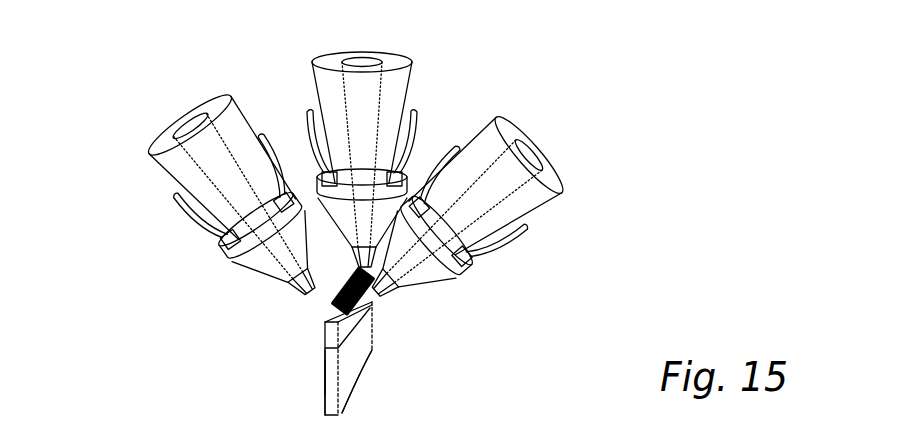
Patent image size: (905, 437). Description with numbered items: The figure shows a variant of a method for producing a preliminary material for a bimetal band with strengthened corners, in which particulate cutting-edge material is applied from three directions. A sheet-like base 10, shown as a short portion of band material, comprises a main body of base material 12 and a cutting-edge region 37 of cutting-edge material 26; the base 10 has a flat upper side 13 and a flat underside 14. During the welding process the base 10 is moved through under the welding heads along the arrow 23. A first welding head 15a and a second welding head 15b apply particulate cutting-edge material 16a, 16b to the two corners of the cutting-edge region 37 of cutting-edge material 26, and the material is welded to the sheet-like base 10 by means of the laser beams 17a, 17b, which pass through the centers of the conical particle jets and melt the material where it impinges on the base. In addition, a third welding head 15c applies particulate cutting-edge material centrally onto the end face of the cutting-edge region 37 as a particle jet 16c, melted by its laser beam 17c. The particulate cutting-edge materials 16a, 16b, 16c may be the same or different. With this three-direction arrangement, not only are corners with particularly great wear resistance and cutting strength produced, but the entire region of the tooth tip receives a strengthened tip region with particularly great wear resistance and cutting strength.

The sheet-like base 10 is at (341, 342).
The base material 12 is at (333, 387).
The upper side 13 is at (309, 368).
The underside 14 is at (394, 372).
The first welding head 15a is at (138, 118).
The second welding head 15b is at (587, 158).
The third welding head 15c is at (437, 78).
The particulate cutting-edge material 16a is at (303, 285).
The particulate cutting-edge material 16b is at (378, 285).
The particle jet of cutting-edge material 16c is at (312, 197).
The laser beam 17a is at (195, 122).
The laser beam 17b is at (530, 155).
The laser beam 17c is at (362, 58).
The arrow 23 is at (320, 382).
The cutting-edge material 26 is at (330, 335).
The cutting-edge region 37 is at (319, 330).